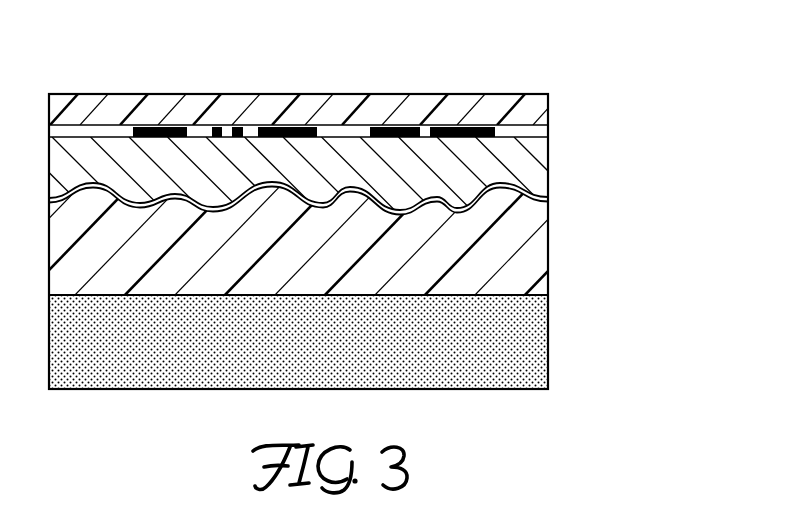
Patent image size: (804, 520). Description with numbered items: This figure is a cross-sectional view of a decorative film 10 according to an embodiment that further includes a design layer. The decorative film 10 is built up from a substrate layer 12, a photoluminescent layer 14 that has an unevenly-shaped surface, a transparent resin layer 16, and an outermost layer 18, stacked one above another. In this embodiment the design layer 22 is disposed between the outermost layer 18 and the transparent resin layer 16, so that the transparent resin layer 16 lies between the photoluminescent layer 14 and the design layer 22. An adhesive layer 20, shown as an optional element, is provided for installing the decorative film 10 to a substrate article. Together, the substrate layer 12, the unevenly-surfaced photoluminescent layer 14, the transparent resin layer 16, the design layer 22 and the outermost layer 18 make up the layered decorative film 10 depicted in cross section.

The decorative film 10 is at (537, 62).
The substrate layer 12 is at (533, 250).
The photoluminescent layer 14 is at (548, 192).
The transparent resin layer 16 is at (548, 157).
The outermost layer 18 is at (548, 98).
The adhesive layer 20 is at (548, 317).
The design layer 22 is at (548, 130).